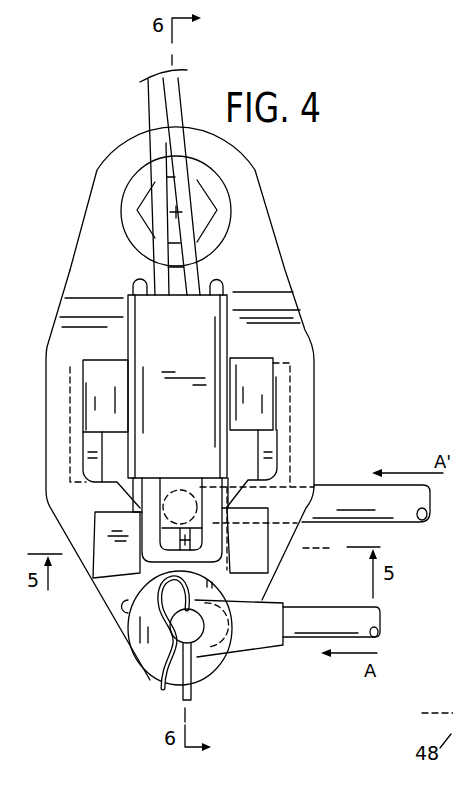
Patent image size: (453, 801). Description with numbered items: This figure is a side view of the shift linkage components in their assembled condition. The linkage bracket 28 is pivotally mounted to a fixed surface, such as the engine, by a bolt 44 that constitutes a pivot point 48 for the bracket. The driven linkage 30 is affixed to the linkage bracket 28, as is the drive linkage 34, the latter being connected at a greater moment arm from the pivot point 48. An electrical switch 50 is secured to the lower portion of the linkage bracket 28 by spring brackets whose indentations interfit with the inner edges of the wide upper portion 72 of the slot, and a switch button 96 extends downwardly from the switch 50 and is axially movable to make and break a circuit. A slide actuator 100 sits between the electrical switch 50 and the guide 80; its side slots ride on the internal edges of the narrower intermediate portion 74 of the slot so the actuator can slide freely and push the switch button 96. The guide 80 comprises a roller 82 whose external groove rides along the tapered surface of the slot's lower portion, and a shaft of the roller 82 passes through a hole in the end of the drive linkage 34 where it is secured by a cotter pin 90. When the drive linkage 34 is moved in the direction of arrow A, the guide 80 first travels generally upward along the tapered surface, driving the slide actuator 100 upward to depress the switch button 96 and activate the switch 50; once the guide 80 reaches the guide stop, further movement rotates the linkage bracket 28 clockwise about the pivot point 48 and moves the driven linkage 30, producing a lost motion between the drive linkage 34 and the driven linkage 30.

The linkage bracket 28 is at (263, 253).
The driven linkage 30 is at (342, 493).
The drive linkage 34 is at (323, 618).
The bolt 44 is at (145, 203).
The pivot point 48 is at (181, 211).
The electrical switch 50 is at (190, 346).
The upper portion of the slot 72 is at (92, 444).
The intermediate portion of the slot 74 is at (205, 572).
The guide 80 is at (213, 670).
The roller 82 is at (152, 673).
The cotter pin 90 is at (182, 697).
The switch button 96 is at (190, 540).
The slide actuator 100 is at (255, 518).